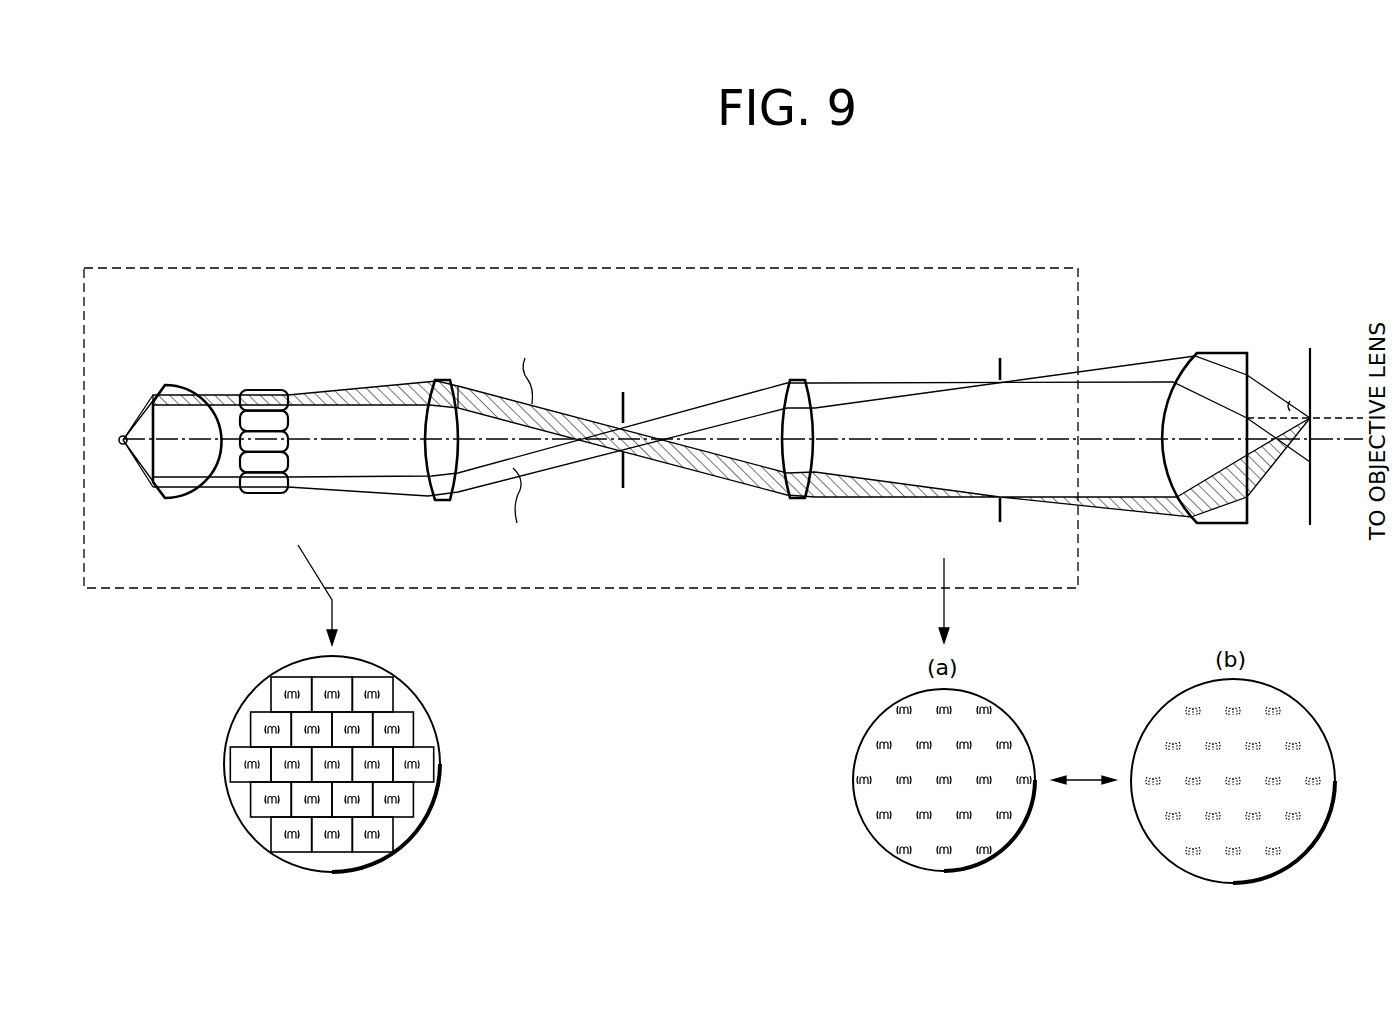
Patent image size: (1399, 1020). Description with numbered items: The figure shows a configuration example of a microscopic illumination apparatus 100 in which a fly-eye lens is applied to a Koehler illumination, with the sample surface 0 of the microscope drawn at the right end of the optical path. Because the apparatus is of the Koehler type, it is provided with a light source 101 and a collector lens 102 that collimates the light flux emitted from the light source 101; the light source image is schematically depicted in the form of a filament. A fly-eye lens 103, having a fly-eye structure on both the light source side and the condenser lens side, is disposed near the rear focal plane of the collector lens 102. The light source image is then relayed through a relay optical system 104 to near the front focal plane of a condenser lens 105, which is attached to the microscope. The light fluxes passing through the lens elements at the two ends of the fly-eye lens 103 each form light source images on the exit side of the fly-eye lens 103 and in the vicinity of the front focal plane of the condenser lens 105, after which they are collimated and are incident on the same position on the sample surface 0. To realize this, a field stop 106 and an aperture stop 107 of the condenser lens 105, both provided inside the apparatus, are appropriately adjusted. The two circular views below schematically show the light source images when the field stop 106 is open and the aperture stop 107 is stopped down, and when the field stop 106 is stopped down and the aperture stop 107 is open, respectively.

The microscopic illumination apparatus 100 is at (755, 267).
The light source 101 is at (123, 436).
The collector lens 102 is at (167, 385).
The fly-eye lens 103 is at (262, 390).
The relay optical system 104 is at (813, 332).
The condenser lens 105 is at (1230, 360).
The field stop 106 is at (622, 489).
The aperture stop 107 is at (998, 511).
The sample surface 0 is at (1309, 352).